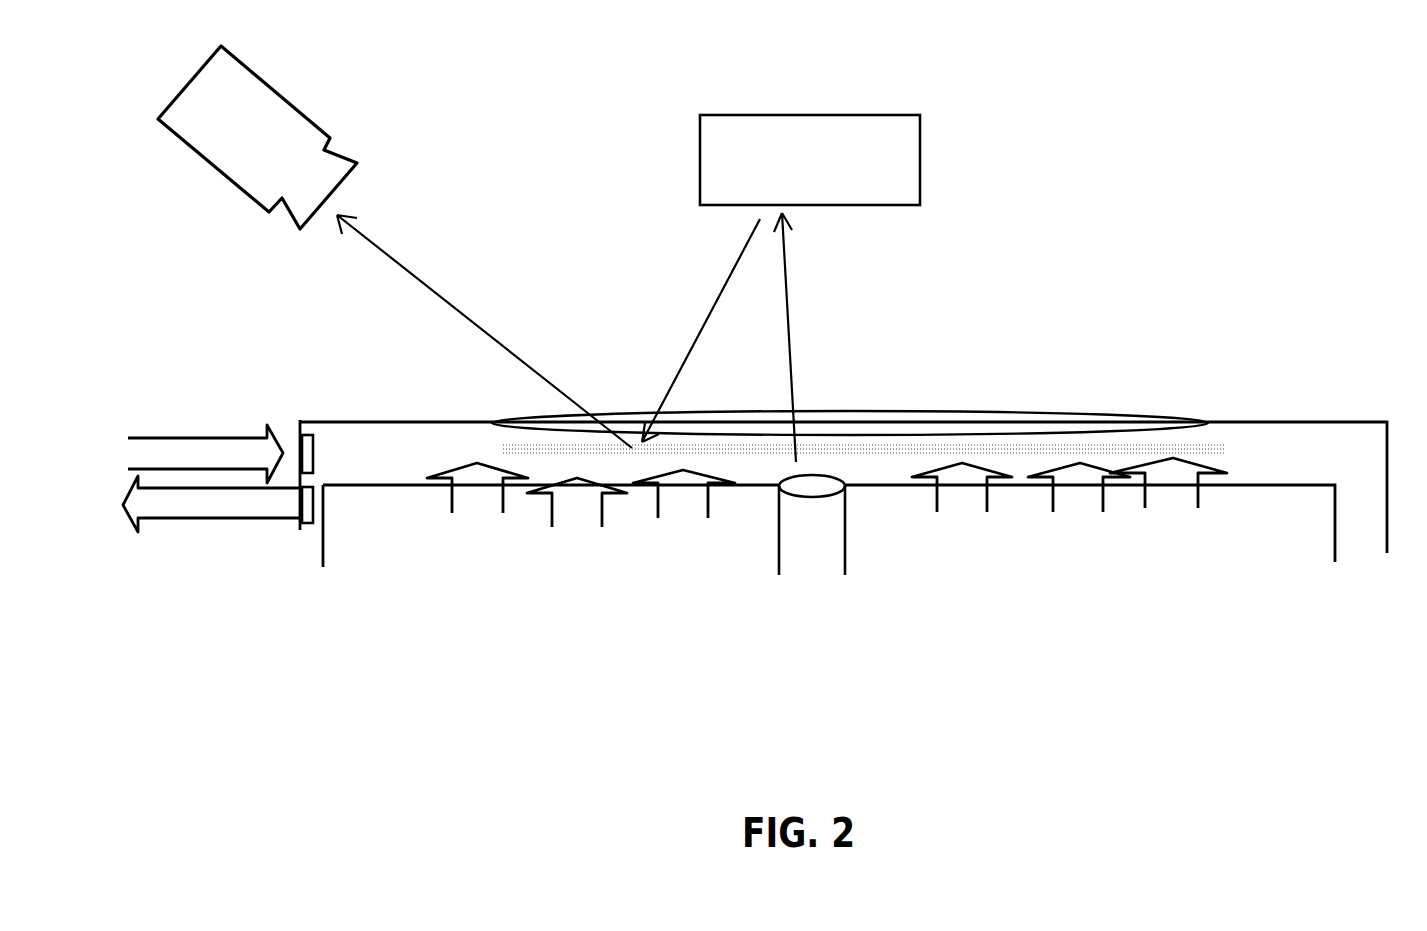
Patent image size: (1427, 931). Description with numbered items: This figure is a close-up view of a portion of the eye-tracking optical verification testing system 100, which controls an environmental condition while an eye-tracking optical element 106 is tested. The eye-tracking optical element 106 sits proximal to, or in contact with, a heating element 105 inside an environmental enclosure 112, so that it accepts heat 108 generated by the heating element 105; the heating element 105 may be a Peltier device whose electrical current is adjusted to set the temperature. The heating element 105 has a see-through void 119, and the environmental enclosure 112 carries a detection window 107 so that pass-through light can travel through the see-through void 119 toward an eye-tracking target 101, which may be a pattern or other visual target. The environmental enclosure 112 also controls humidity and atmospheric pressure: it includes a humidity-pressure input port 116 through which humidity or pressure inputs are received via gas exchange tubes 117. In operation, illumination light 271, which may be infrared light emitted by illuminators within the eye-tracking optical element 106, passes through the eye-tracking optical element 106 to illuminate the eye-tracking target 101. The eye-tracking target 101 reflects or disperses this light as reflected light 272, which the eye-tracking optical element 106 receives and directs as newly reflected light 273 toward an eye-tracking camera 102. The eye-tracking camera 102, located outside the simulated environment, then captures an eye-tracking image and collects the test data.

The eye-tracking optical verification testing system 100 is at (1272, 87).
The eye-tracking target 101 is at (700, 150).
The eye-tracking camera 102 is at (220, 173).
The heating element 105 is at (323, 543).
The eye-tracking optical element 106 is at (543, 453).
The detection window 107 is at (1090, 410).
The heat 108 is at (1105, 500).
The environmental enclosure 112 is at (1333, 420).
The humidity-pressure input port 116 is at (300, 450).
The gas exchange tubes 117 is at (153, 520).
The see-through void 119 is at (845, 543).
The illumination light 271 is at (790, 263).
The reflected light 272 is at (725, 282).
The newly reflected light 273 is at (377, 248).